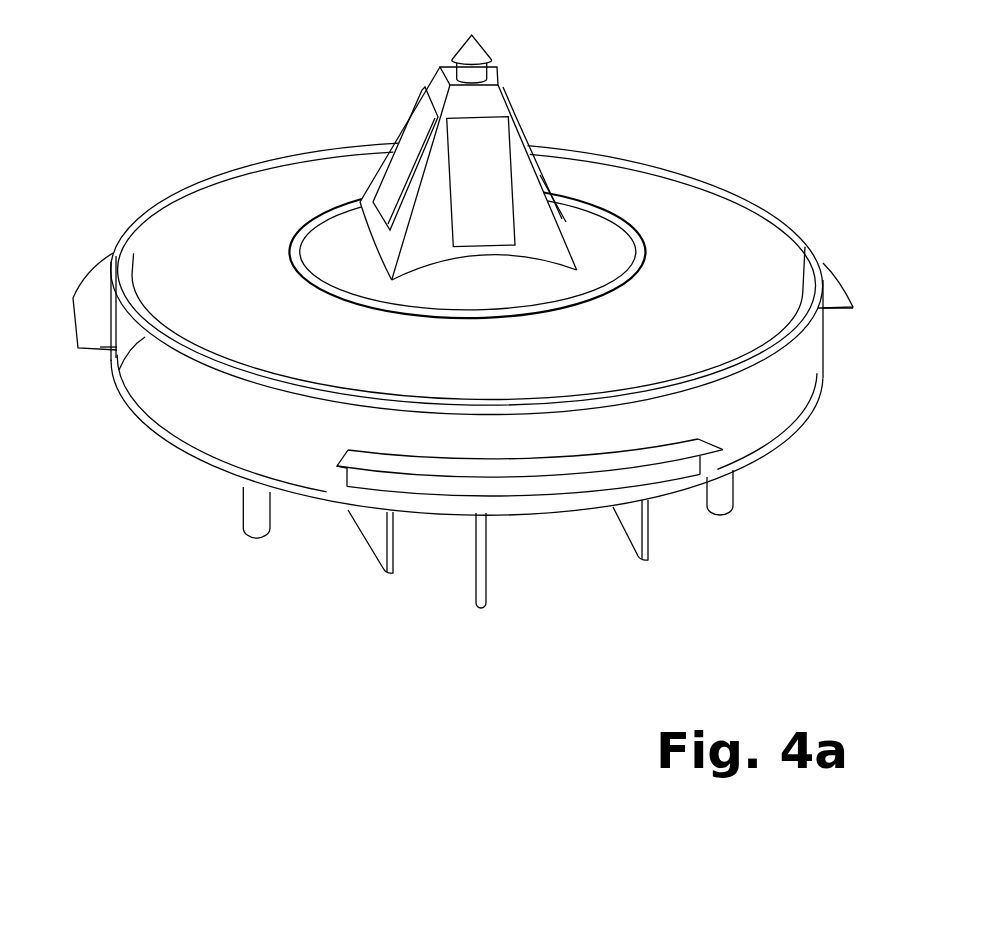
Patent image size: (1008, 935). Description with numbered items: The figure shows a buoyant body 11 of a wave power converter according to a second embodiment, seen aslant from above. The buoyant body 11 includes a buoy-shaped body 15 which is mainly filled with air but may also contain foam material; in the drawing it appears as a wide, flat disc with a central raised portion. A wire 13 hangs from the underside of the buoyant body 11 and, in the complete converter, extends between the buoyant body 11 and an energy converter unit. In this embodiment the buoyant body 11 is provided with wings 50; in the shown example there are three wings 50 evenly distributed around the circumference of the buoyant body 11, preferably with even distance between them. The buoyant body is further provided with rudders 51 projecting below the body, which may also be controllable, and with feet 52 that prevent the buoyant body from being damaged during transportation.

The buoyant body 11 is at (457, 346).
The buoy-shaped body 15 is at (172, 237).
The wing 50 is at (90, 312).
The rudder 51 is at (378, 548).
The foot 52 is at (253, 523).
The wire 13 is at (482, 573).